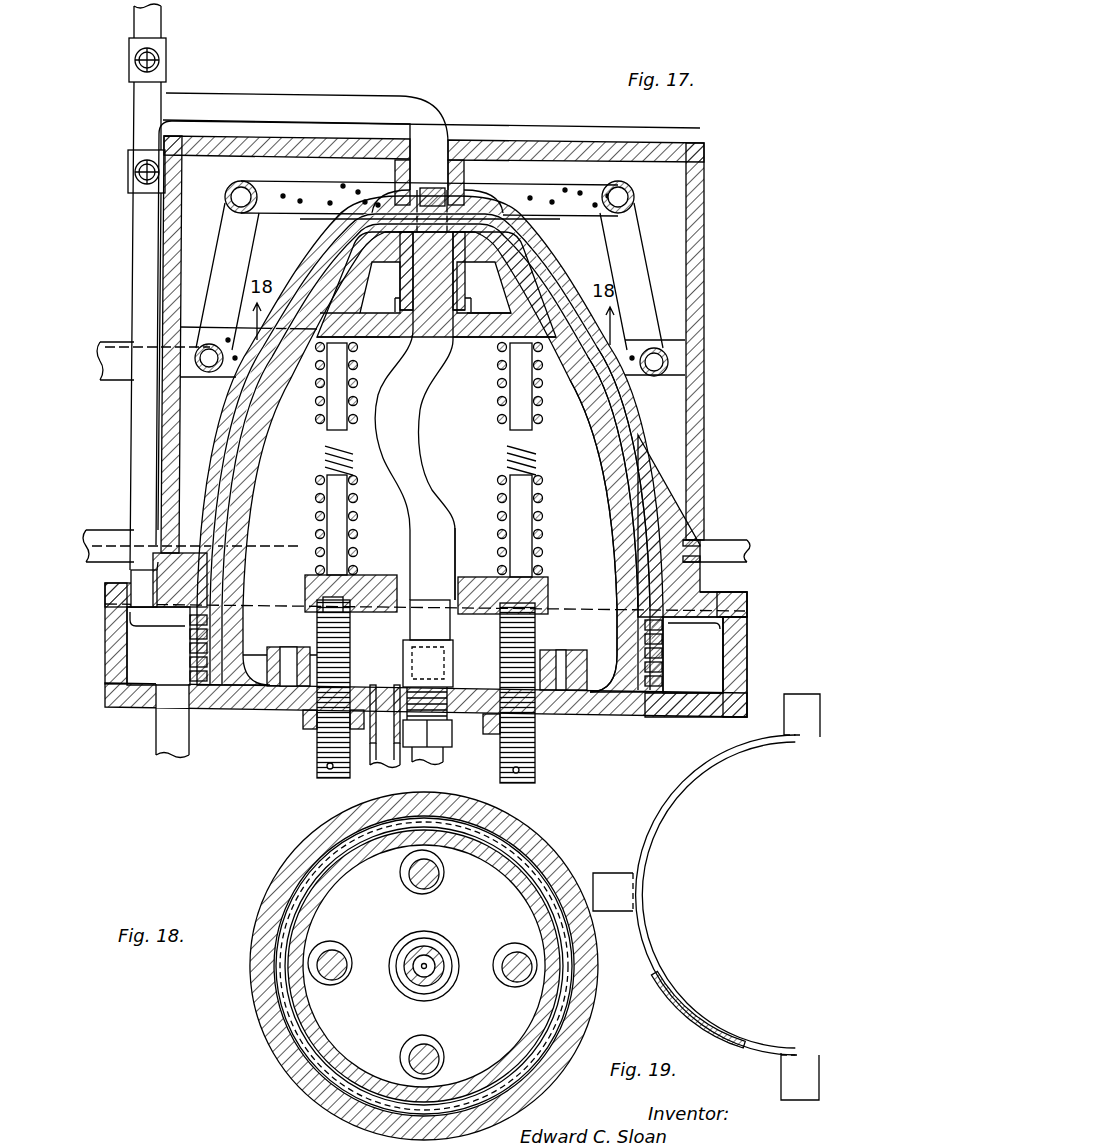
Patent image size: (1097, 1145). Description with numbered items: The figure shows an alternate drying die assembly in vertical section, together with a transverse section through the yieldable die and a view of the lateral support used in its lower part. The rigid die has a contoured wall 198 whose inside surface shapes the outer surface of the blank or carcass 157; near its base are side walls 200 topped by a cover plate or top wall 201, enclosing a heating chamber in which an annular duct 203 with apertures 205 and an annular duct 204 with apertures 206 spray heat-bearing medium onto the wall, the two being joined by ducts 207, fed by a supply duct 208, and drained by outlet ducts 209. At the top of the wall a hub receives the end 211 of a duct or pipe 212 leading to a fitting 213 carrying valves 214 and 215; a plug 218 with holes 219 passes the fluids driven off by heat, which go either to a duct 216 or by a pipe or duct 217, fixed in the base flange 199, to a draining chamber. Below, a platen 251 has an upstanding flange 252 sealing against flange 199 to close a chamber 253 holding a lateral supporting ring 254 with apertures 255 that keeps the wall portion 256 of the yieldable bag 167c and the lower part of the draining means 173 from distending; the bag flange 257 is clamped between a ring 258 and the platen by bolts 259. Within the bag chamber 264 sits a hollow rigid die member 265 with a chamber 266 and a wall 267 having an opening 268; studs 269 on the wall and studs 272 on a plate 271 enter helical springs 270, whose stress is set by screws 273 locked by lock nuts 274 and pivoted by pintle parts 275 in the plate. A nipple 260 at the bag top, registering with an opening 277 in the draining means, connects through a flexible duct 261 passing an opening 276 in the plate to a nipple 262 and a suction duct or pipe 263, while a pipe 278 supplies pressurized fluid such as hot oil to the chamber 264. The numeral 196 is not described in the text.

In FIG. 17, the duct or pipe 216 is at (134, 24).
In FIG. 17, the valve 214 is at (129, 69).
In FIG. 17, the pipe or duct 217 is at (133, 302).
In FIG. 17, the valve 215 is at (128, 179).
In FIG. 17, the fitting 213 is at (140, 125).
In FIG. 17, the duct or pipe 212 is at (297, 102).
In FIG. 17, the end of duct or pipe 211 is at (449, 130).
In FIG. 17, the cover plate or top wall 201 is at (641, 153).
In FIG. 17, the side walls 200 is at (692, 312).
In FIG. 17, the plug 218 is at (401, 182).
In FIG. 17, the holes or apertures 219 is at (374, 194).
In FIG. 17, the apertures 205 is at (306, 198).
In FIG. 17, the annular duct 203 is at (573, 196).
In FIG. 17, the ducts 207 is at (224, 241).
In FIG. 17, the annular duct 204 is at (224, 380).
In FIG. 17, the apertures 206 is at (244, 340).
In FIG. 17, the supply duct 208 is at (114, 376).
In FIG. 17, the outlet or drain ducts 209 is at (110, 528).
In FIG. 17, the hollow rigid die member 265 is at (515, 286).
In FIG. 17, the yieldable die member or bag 167c is at (250, 537).
In FIG. 18, the yieldable die member or bag 167c is at (548, 918).
In FIG. 17, the blank or carcass 157 is at (628, 405).
In FIG. 18, the blank or carcass 157 is at (578, 1003).
In FIG. 17, the draining means 173 is at (622, 453).
In FIG. 18, the draining means 173 is at (272, 1009).
In FIG. 17, the contoured wall 198 is at (620, 479).
In FIG. 18, the contoured wall 198 is at (300, 1079).
In FIG. 17, the chamber 266 is at (511, 273).
In FIG. 17, the wall 267 is at (465, 323).
In FIG. 17, the nipple 260 is at (416, 272).
In FIG. 17, the opening 268 is at (403, 320).
In FIG. 17, the flexible duct 261 is at (436, 396).
In FIG. 18, the flexible duct 261 is at (440, 978).
In FIG. 17, the studs 269 is at (503, 373).
In FIG. 18, the studs 269 is at (397, 922).
In FIG. 17, the helical springs 270 is at (536, 440).
In FIG. 18, the helical springs 270 is at (400, 877).
In FIG. 17, the studs 272 is at (530, 539).
In FIG. 17, the chamber 264 is at (461, 486).
In FIG. 17, the opening 276 is at (459, 576).
In FIG. 17, the pintle or pivot parts 275 is at (305, 592).
In FIG. 17, the plate 271 is at (548, 582).
In FIG. 17, the screws 273 is at (317, 750).
In FIG. 17, the bolts 259 is at (536, 730).
In FIG. 17, the lock nuts 274 is at (303, 724).
In FIG. 17, the nipple 262 is at (455, 738).
In FIG. 17, the duct or pipe 263 is at (427, 736).
In FIG. 17, the duct or pipe 278 is at (379, 735).
In FIG. 17, the ring 258 is at (549, 660).
In FIG. 17, the wall portion 256 is at (606, 645).
In FIG. 17, the flange 257 is at (600, 715).
In FIG. 17, the ring tab 196 is at (700, 600).
In FIG. 19, the ring tab 196 is at (620, 897).
In FIG. 17, the base flange 199 is at (747, 600).
In FIG. 17, the platen 251 is at (695, 717).
In FIG. 17, the chamber 253 is at (748, 620).
In FIG. 17, the upstanding flange 252 is at (736, 652).
In FIG. 17, the lateral supporting ring 254 is at (669, 645).
In FIG. 19, the lateral supporting ring 254 is at (645, 850).
In FIG. 17, the apertures 255 is at (663, 680).
In FIG. 19, the apertures 255 is at (683, 1006).
In FIG. 17, the opening 277 is at (432, 222).